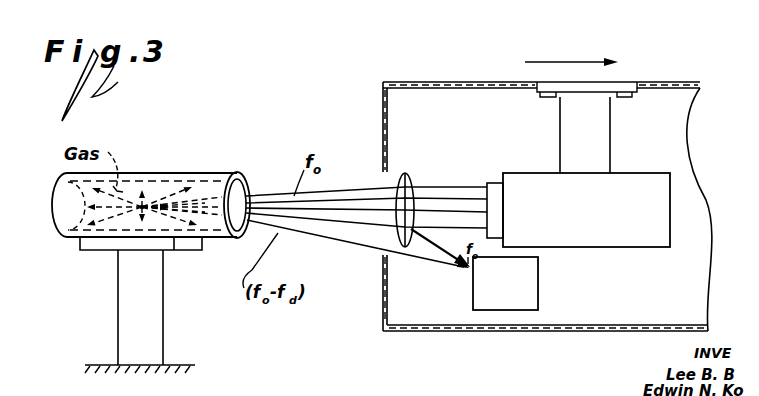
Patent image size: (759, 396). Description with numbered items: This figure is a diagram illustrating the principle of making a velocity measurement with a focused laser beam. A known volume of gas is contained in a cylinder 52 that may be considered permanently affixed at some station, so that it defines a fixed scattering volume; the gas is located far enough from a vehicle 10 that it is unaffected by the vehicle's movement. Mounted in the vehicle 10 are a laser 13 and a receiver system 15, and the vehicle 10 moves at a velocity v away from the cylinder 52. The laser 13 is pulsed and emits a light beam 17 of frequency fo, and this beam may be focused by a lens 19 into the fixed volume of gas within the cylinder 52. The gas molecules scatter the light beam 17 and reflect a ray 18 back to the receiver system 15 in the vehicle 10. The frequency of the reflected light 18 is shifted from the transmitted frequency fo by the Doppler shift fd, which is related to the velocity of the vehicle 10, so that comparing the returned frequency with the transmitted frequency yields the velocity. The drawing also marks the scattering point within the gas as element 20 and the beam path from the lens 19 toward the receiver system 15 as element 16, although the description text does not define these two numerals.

The vehicle 10 is at (653, 84).
The laser 13 is at (560, 249).
The receiver system 15 is at (538, 300).
The scattered reference beam 16 is at (450, 258).
The light beam 17 is at (448, 188).
The reflected ray 18 is at (357, 246).
The lens 19 is at (412, 174).
The gas cell / scattering medium 20 is at (143, 207).
The cylinder 52 is at (240, 177).